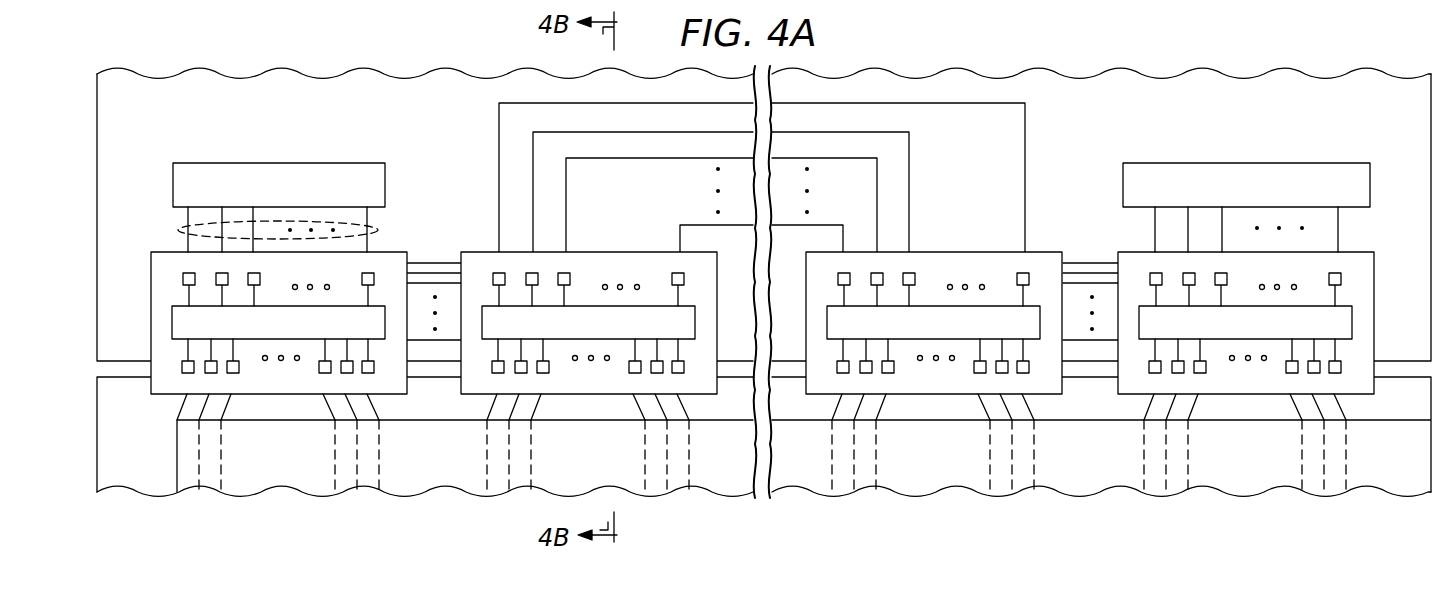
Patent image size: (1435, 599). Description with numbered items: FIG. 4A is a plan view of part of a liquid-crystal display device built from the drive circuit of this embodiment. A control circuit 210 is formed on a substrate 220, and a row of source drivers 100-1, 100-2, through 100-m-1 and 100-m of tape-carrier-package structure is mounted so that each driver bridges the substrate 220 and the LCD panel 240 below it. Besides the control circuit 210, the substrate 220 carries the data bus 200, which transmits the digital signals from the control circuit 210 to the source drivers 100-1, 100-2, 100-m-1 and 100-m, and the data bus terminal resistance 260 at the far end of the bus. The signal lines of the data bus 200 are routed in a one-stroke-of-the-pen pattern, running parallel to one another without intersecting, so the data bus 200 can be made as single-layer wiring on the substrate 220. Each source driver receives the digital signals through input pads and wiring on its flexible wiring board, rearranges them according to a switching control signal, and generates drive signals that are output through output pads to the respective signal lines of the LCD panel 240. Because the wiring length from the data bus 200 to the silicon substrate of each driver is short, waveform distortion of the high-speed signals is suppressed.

The substrate 220 is at (352, 70).
The LCD panel 240 is at (423, 500).
The control circuit 210 is at (265, 163).
The data bus 200 is at (180, 230).
The terminal resistance 260 is at (1262, 163).
The first source driver 100-1 is at (168, 402).
The second source driver 100-2 is at (478, 250).
The (m-1)th source driver 100-m-1 is at (1043, 250).
The m-th source driver 100-m is at (1247, 395).